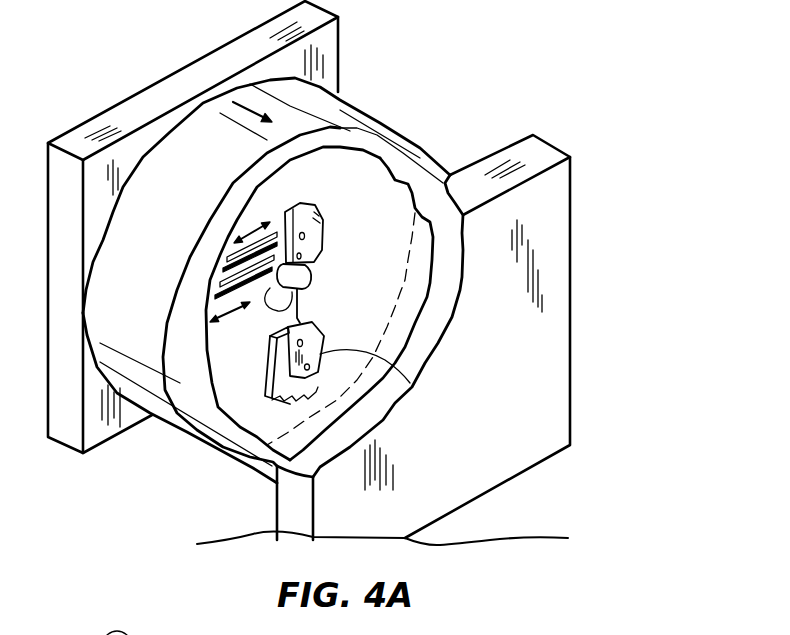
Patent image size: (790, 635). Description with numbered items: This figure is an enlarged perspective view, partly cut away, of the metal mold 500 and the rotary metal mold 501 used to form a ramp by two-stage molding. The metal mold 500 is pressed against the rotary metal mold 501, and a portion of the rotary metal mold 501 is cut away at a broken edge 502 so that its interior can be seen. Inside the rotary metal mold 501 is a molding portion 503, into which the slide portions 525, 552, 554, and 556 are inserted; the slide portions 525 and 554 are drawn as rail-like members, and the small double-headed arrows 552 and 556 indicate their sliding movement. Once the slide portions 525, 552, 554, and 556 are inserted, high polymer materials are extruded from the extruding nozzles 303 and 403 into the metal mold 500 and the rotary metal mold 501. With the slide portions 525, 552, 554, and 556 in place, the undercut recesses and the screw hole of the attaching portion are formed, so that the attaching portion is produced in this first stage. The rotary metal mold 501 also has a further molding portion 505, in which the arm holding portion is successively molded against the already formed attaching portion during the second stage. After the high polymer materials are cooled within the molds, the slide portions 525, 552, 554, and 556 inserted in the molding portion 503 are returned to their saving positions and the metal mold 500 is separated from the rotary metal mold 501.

The metal mold 500 is at (190, 138).
The rotary metal mold 501 is at (383, 148).
The broken-away edge of drum wall 502 is at (440, 182).
The molding portion 503 is at (318, 226).
The extruding nozzle 303 is at (305, 272).
The extruding nozzle 403 is at (303, 310).
The molding portion 505 is at (407, 383).
The slide portion 525 is at (225, 262).
The slide portion 554 is at (211, 293).
The slide portion 552 is at (275, 226).
The slide portion 556 is at (256, 293).